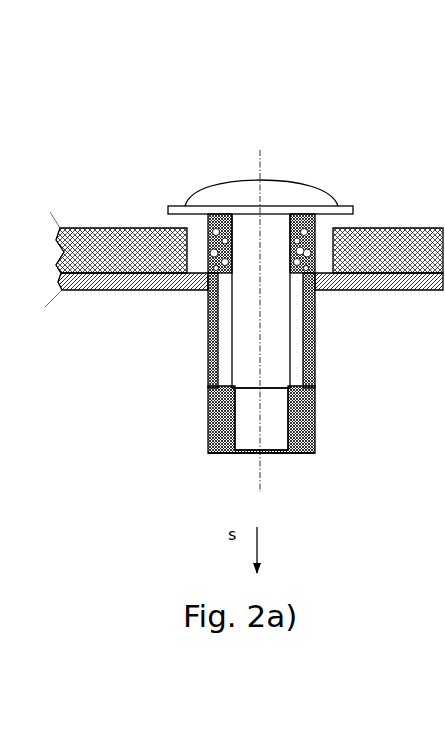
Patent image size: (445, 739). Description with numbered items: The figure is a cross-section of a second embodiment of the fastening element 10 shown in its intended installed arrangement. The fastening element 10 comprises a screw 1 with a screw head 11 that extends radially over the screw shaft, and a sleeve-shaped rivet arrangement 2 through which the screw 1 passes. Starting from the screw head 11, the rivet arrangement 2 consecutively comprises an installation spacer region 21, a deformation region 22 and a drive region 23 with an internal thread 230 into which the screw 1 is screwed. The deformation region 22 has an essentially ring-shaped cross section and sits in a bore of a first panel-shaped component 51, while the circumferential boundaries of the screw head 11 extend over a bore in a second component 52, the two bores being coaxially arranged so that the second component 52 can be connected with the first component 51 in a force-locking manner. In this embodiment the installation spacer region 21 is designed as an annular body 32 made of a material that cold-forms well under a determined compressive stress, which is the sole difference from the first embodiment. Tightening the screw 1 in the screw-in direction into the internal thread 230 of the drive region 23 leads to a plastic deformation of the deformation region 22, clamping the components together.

The screw 1 is at (285, 249).
The screw head 11 is at (340, 206).
The rivet arrangement 2 is at (279, 363).
The installation spacer region 21 is at (318, 252).
The deformation region 22 is at (316, 327).
The drive region 23 is at (316, 418).
The internal thread 230 is at (228, 418).
The annular body 32 is at (203, 226).
The first panel-shaped component 51 is at (135, 293).
The second component 52 is at (133, 228).
The fastening element 10 is at (300, 482).